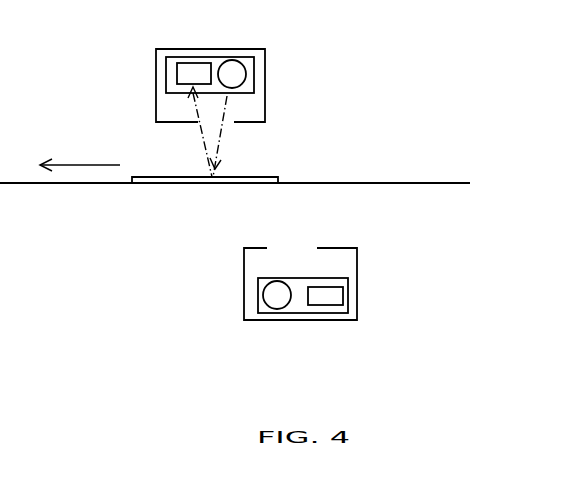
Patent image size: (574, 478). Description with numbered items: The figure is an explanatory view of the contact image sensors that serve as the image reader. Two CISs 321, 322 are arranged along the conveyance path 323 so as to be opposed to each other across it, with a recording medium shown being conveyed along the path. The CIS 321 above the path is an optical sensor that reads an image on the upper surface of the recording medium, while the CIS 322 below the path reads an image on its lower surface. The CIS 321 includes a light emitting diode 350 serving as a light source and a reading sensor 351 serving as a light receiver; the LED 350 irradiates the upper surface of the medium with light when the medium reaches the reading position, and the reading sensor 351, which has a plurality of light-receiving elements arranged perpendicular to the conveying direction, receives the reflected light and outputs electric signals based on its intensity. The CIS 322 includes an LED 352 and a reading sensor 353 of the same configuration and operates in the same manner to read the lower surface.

The contact image sensor 321 is at (185, 49).
The contact image sensor 322 is at (330, 323).
The conveyance path 323 is at (430, 183).
The light emitting diode 350 is at (238, 62).
The reading sensor 351 is at (197, 63).
The LED 352 is at (272, 312).
The reading sensor 353 is at (325, 308).